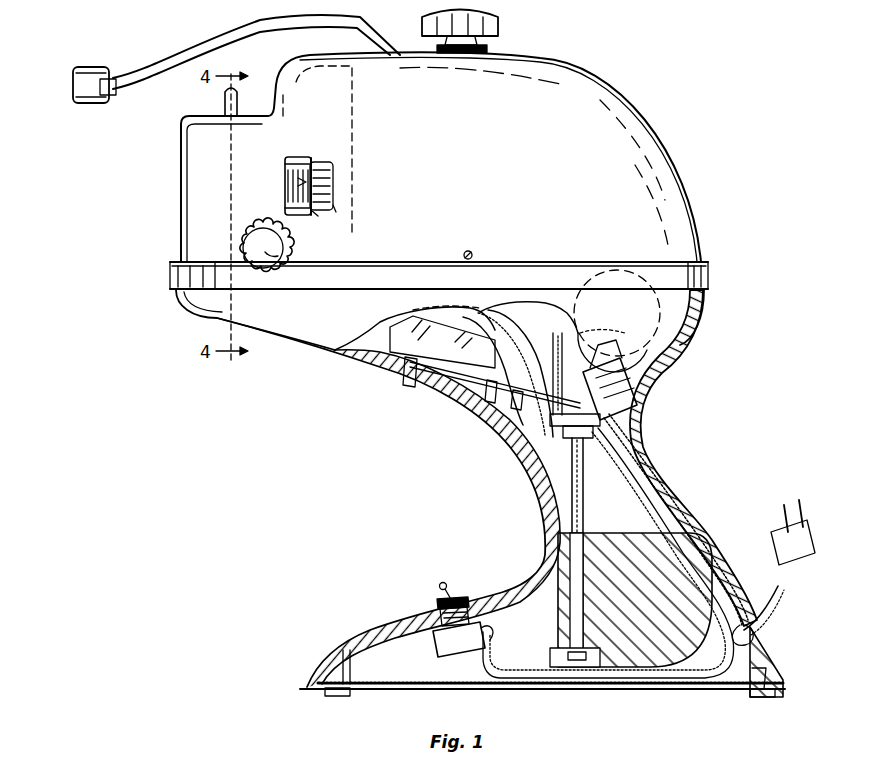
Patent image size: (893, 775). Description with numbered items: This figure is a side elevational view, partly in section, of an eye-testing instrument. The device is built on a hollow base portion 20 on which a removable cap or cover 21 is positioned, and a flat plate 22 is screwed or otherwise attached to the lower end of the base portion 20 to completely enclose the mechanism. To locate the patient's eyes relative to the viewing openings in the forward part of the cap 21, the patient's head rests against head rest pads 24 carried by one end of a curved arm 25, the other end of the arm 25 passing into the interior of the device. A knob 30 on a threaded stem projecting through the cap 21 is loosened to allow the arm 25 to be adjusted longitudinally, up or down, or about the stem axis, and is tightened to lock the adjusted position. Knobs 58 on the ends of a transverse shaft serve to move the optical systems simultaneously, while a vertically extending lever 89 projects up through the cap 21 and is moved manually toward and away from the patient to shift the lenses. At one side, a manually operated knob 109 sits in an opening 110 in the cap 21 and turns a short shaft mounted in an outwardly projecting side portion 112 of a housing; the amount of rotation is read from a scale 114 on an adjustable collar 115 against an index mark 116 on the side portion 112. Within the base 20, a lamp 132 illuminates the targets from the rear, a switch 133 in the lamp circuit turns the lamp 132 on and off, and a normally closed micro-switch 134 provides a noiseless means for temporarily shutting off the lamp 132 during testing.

The hollow base portion 20 is at (672, 490).
The removable cap or cover 21 is at (672, 166).
The flat plate 22 is at (653, 692).
The head rest pads 24 is at (92, 66).
The curved arm 25 is at (253, 30).
The knob 30 is at (500, 24).
The knobs 58 is at (292, 248).
The vertically extending lever 89 is at (223, 98).
The manually operated knob 109 is at (330, 162).
The opening 110 is at (330, 207).
The outwardly projecting side portion 112 is at (292, 180).
The scale 114 is at (311, 160).
The adjustable collar 115 is at (312, 212).
The index mark 116 is at (305, 186).
The lamp 132 is at (652, 362).
The switch 133 is at (431, 649).
The micro-switch 134 is at (400, 324).